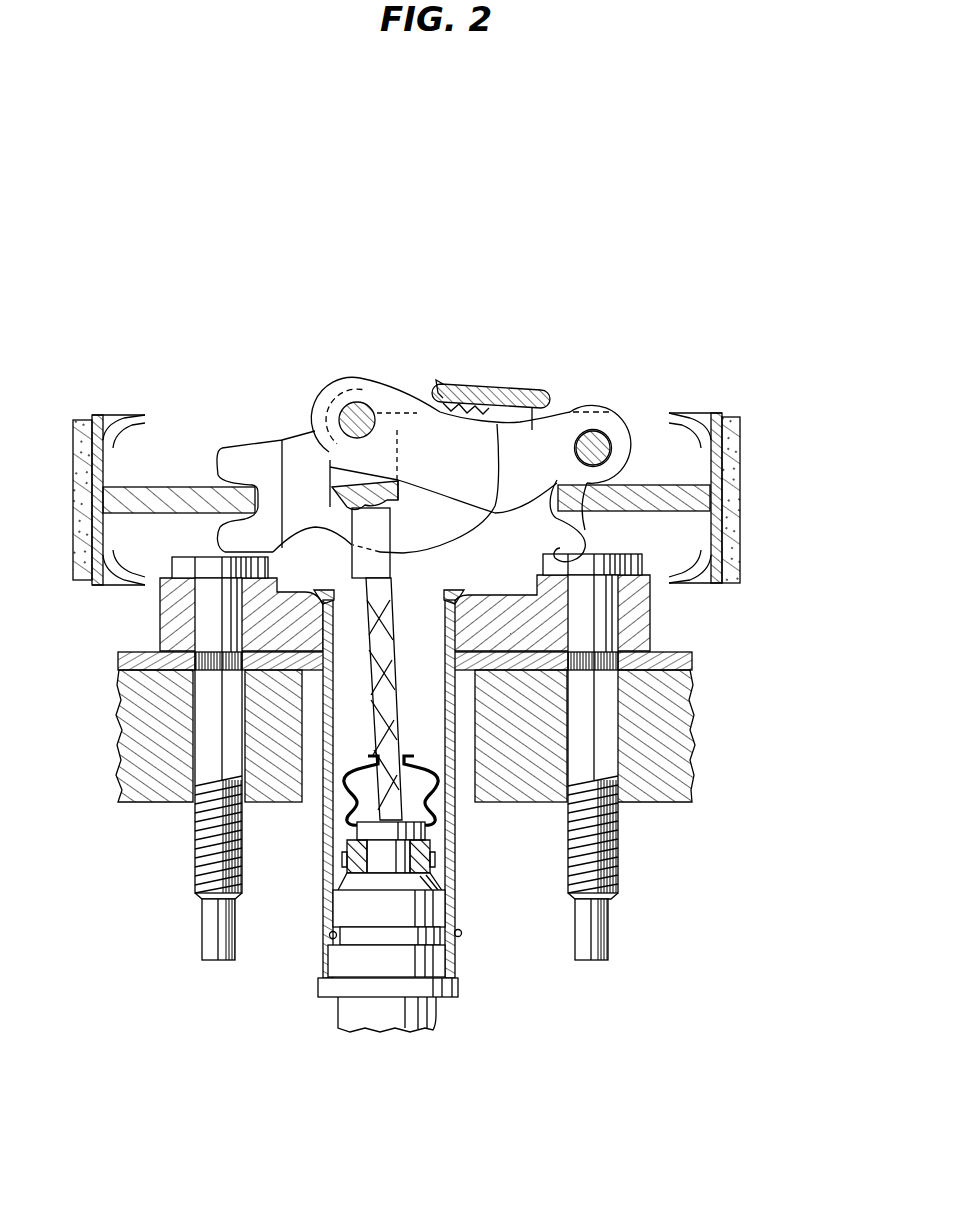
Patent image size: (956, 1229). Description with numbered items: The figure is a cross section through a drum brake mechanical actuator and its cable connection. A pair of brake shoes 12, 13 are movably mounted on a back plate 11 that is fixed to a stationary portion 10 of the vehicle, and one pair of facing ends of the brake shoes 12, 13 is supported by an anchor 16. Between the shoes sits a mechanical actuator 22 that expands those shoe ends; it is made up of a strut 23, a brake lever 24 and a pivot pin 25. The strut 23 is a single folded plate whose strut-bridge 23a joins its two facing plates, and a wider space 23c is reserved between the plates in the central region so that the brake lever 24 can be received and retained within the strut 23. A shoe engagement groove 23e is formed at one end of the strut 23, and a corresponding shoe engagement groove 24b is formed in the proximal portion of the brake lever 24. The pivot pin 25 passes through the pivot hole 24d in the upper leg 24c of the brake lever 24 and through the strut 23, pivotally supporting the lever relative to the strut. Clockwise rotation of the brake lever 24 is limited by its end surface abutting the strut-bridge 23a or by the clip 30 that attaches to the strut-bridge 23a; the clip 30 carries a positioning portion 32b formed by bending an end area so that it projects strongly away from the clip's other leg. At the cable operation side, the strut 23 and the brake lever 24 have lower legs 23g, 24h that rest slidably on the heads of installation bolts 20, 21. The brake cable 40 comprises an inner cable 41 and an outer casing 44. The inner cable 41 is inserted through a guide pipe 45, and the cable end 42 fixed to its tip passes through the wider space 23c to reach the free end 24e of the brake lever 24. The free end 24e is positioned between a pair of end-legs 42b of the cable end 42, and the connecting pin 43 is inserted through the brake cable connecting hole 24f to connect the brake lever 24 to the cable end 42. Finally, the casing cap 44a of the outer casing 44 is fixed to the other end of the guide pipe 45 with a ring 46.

The stationary portion 10 is at (650, 804).
The back plate 11 is at (121, 654).
The brake shoe 12 is at (100, 412).
The brake shoe 13 is at (736, 412).
The anchor 16 is at (660, 620).
The installation bolt 20 is at (197, 840).
The installation bolt 21 is at (614, 870).
The mechanical actuator 22 is at (500, 354).
The strut 23 is at (441, 549).
The strut-bridge 23a is at (437, 393).
The wider space 23c is at (279, 439).
The shoe engagement groove 23e is at (240, 498).
The lower leg 23g is at (227, 562).
The brake lever 24 is at (418, 404).
The shoe engagement groove 24b is at (637, 497).
The upper leg 24c is at (624, 442).
The pivot hole 24d is at (600, 440).
The free end 24e is at (348, 392).
The brake cable connecting hole 24f is at (366, 410).
The lower leg 24h is at (585, 560).
The pivot pin 25 is at (588, 443).
The clip 30 is at (525, 379).
The positioning portion 32b is at (495, 516).
The brake cable 40 is at (452, 1025).
The inner cable 41 is at (358, 797).
The cable end 42 is at (352, 525).
The end-legs 42b is at (296, 470).
The connecting pin 43 is at (341, 402).
The outer casing 44 is at (352, 1012).
The casing cap 44a is at (345, 910).
The guide pipe 45 is at (457, 960).
The ring 46 is at (463, 936).